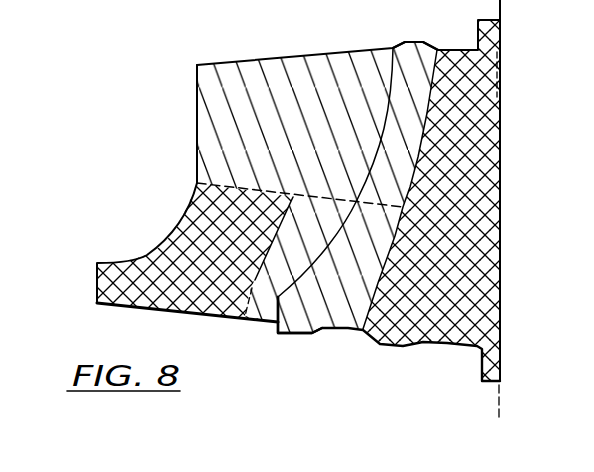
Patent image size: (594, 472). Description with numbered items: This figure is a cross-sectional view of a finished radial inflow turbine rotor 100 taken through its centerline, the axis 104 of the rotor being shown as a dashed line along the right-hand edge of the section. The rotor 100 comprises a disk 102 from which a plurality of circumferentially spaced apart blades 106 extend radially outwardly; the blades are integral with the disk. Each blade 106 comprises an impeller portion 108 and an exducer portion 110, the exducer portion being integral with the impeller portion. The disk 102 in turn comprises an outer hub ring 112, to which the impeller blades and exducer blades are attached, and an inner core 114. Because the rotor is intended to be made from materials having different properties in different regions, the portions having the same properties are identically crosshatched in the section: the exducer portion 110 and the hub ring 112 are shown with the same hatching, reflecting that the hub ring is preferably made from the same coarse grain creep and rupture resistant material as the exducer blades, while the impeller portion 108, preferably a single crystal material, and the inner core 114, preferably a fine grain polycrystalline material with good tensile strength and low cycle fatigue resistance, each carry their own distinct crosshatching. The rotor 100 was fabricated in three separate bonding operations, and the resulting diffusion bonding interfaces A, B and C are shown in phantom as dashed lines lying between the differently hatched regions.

The radial inflow turbine rotor 100 is at (328, 370).
The disk 102 is at (425, 34).
The axis 104 is at (500, 399).
The blades 106 is at (189, 97).
The impeller portion 108 is at (143, 262).
The exducer portion 110 is at (264, 63).
The outer hub ring 112 is at (292, 336).
The inner core 114 is at (498, 256).
The diffusion bonding interface A is at (262, 282).
The diffusion bonding interface B is at (250, 187).
The diffusion bonding interface C is at (423, 147).